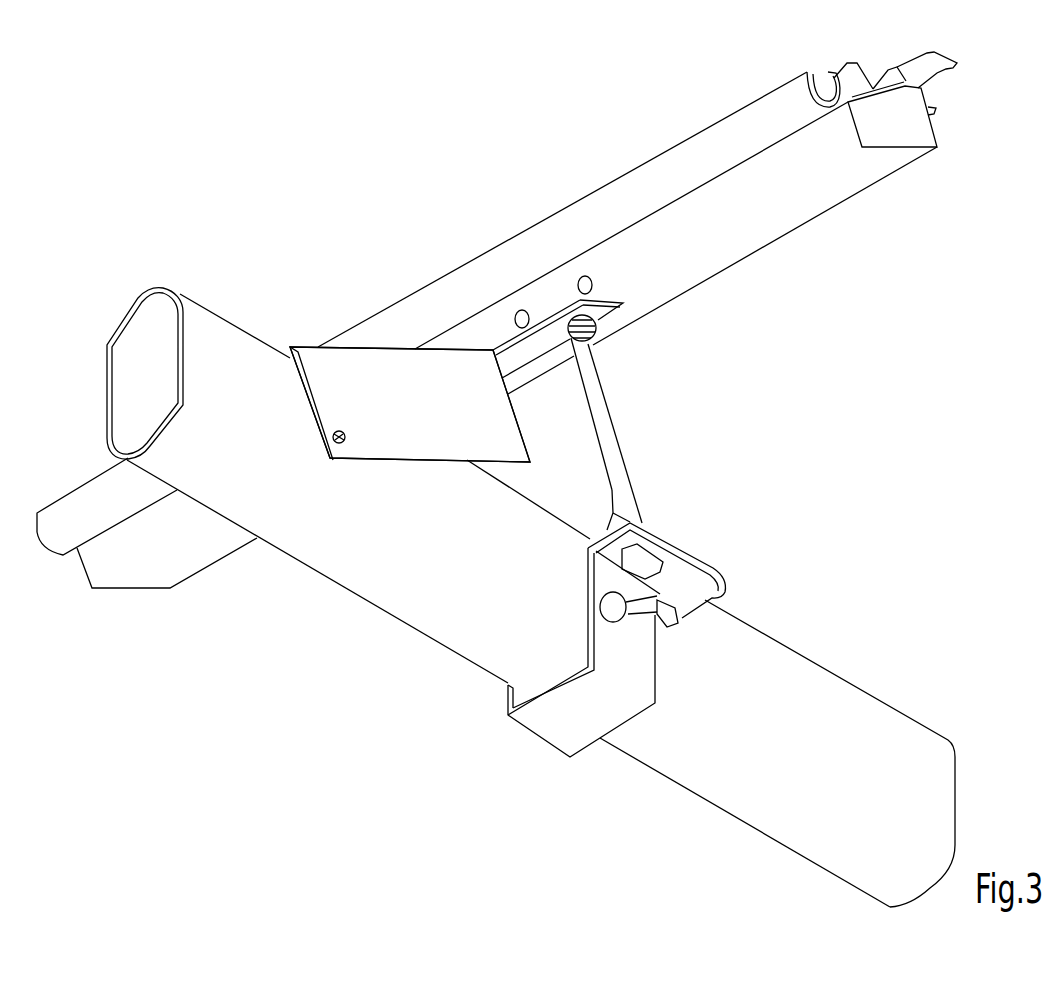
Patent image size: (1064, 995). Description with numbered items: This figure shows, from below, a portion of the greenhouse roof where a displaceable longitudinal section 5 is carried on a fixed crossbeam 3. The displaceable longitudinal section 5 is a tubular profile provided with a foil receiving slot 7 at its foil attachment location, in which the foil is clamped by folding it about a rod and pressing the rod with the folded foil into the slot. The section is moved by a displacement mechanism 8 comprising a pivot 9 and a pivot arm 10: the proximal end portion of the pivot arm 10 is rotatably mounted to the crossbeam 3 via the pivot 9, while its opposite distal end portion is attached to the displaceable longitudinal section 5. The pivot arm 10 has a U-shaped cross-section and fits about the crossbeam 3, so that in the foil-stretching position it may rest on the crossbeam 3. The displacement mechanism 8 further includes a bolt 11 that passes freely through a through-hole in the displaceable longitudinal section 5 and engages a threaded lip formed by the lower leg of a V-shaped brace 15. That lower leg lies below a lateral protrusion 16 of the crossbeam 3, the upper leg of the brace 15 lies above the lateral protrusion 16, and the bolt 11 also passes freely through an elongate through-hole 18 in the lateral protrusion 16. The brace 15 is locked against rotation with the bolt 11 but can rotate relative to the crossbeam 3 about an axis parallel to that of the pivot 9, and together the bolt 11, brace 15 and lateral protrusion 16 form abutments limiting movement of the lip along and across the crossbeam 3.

The crossbeam 3 is at (790, 670).
The displaceable longitudinal section 5 is at (688, 148).
The foil receiving slot 7 is at (823, 88).
The displacement mechanism 8 is at (368, 355).
The pivot 9 is at (343, 430).
The pivot arm 10 is at (398, 373).
The bolt 11 is at (592, 390).
The V-shaped brace 15 is at (719, 559).
The lateral protrusion 16 is at (610, 523).
The elongate through-hole 18 is at (640, 527).